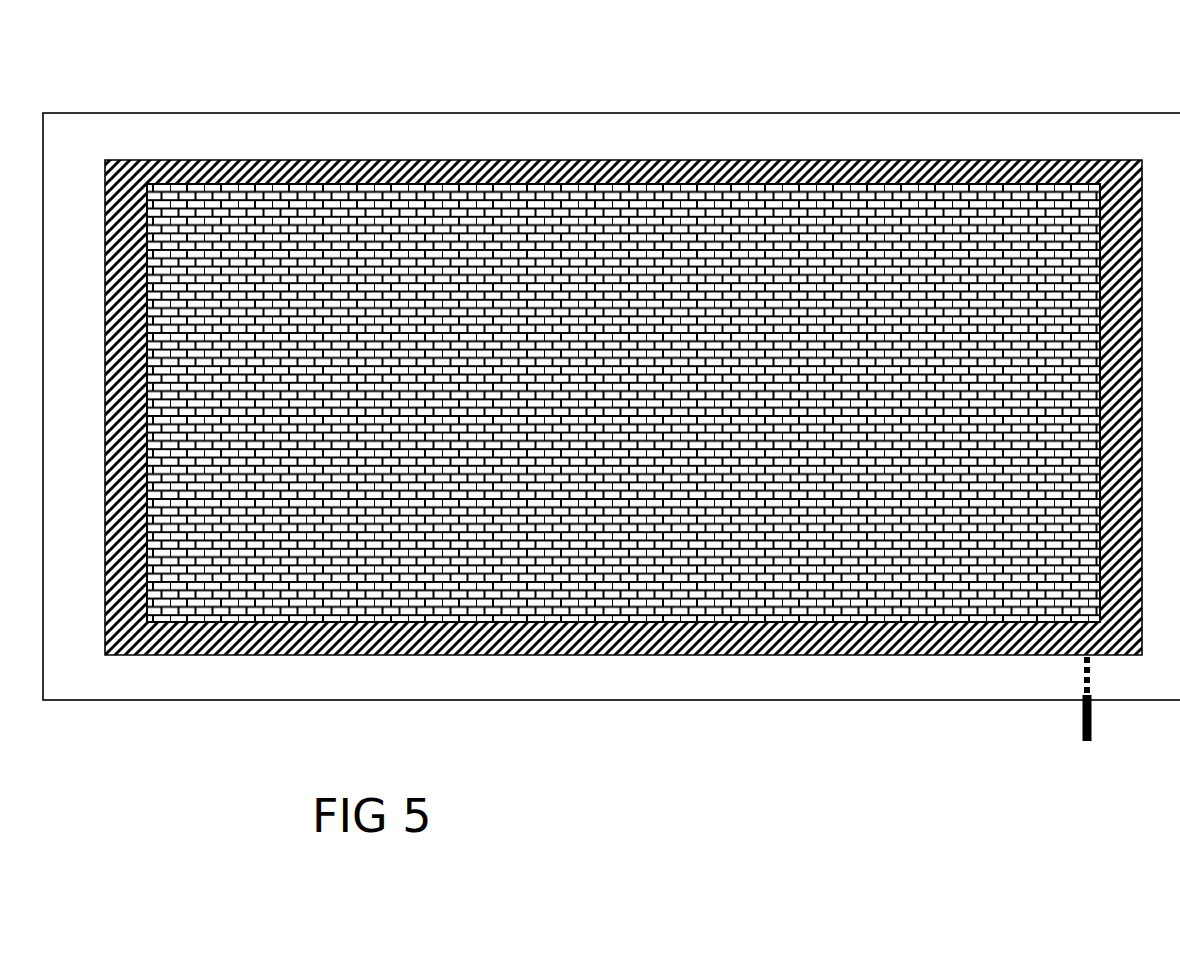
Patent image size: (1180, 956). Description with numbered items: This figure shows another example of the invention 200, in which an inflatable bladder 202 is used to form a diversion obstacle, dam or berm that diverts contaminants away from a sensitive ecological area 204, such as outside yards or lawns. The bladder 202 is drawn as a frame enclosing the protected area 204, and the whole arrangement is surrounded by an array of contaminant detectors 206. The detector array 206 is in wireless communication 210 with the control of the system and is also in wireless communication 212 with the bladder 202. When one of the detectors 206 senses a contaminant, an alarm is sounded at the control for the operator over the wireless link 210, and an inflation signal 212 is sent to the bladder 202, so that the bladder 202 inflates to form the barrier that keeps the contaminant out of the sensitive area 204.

The invention 200 is at (611, 455).
The inflatable bladder 202 is at (500, 653).
The sensitive ecological area 204 is at (170, 218).
The array of contaminant detectors 206 is at (792, 710).
The wireless communication 210 is at (1076, 741).
The wireless communication / inflation signal 212 is at (1078, 679).